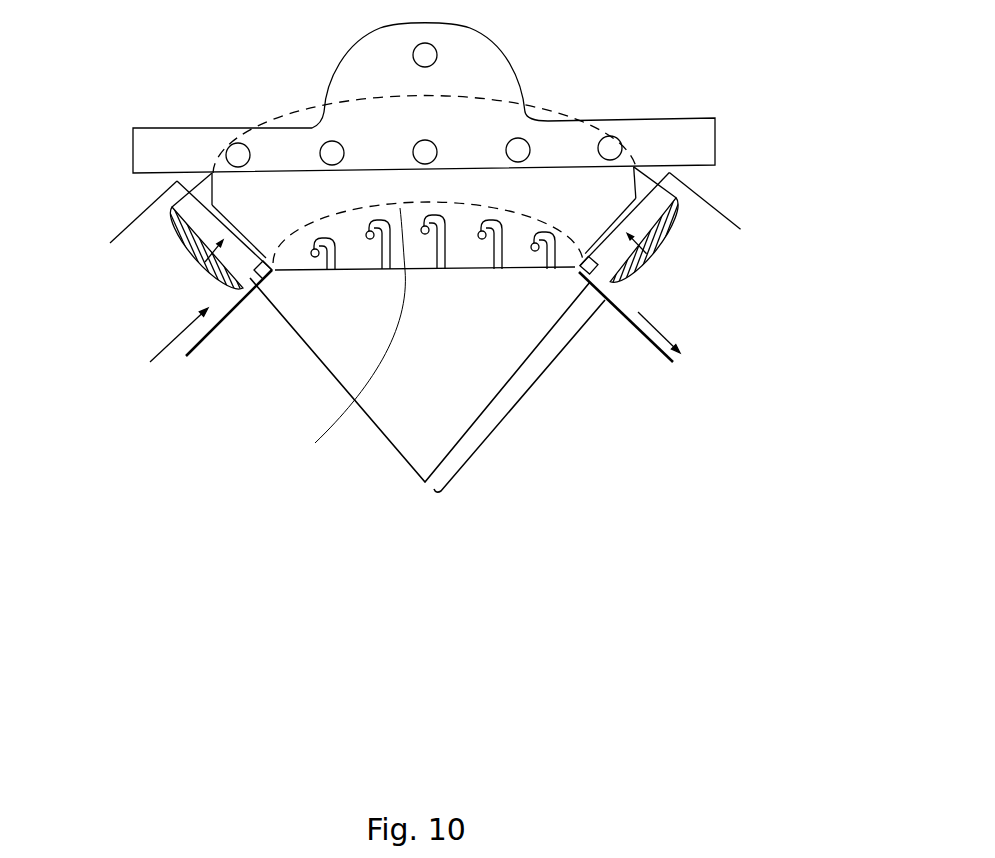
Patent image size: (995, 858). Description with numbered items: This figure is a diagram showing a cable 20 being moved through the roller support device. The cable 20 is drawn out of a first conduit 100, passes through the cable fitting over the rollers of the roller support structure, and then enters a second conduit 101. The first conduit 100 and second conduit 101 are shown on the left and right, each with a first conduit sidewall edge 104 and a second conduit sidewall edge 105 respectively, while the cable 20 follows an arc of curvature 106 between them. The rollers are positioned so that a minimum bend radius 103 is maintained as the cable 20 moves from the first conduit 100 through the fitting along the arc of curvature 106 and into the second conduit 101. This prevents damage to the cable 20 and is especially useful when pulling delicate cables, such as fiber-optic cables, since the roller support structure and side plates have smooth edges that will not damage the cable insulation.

The first conduit 100 is at (130, 243).
The second conduit 101 is at (712, 270).
The cable 20 is at (255, 267).
The first conduit sidewall edge 104 is at (158, 357).
The second conduit sidewall edge 105 is at (622, 370).
The arc of curvature 106 is at (424, 316).
The minimum bend radius 103 is at (552, 374).